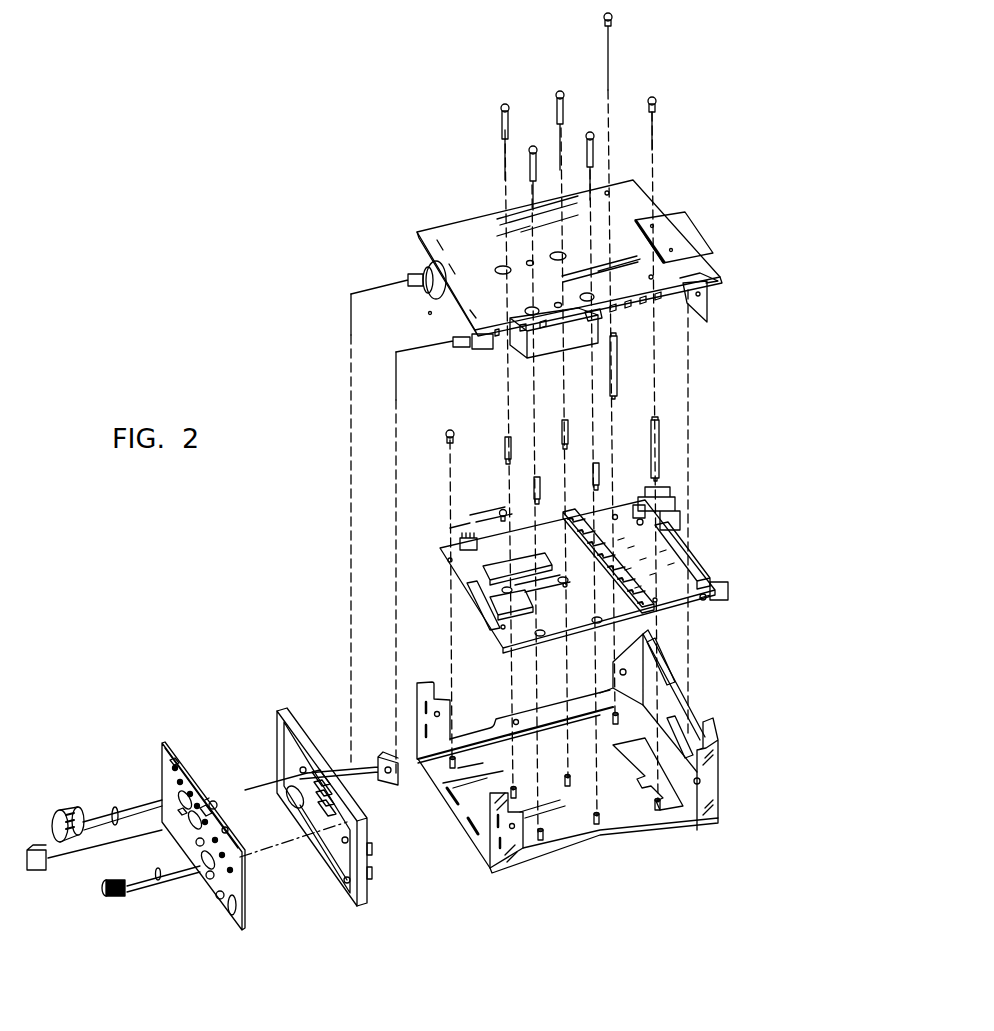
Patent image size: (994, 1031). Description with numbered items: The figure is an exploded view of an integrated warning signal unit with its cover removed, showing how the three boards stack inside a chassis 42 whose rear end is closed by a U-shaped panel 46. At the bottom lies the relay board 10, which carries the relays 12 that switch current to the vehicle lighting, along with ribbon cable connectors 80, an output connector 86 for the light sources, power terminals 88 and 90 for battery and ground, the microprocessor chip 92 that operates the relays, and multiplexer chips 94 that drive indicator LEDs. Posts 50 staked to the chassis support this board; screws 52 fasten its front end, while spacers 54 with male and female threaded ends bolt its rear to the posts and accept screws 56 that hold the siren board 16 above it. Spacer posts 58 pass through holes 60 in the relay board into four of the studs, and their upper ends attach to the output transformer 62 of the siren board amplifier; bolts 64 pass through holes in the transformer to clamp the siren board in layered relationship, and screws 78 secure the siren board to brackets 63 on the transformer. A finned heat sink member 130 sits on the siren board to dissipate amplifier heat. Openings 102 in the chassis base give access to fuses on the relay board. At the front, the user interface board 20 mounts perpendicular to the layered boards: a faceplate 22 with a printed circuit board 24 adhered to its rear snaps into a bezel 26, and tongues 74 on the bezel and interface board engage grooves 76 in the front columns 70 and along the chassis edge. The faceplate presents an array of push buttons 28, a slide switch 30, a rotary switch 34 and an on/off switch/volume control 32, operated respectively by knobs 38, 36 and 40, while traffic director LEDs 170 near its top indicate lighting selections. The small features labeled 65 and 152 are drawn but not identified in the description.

The relay board 10 is at (503, 516).
The relays 12 is at (573, 512).
The siren board 16 is at (495, 215).
The user interface board 20 is at (283, 683).
The faceplate 22 is at (237, 925).
The printed circuit board 24 is at (167, 745).
The bezel 26 is at (287, 713).
The push buttons 28 is at (205, 880).
The slide switch 30 is at (388, 762).
The on/off switch/volume control 32 is at (478, 348).
The rotary switch 34 is at (434, 296).
The knob 36 is at (62, 812).
The knob 38 is at (38, 866).
The knob 40 is at (108, 895).
The chassis 42 is at (660, 830).
The U-shaped panel 46 is at (700, 723).
The posts 50 is at (456, 762).
The screws 52 is at (446, 430).
The spacers 54 is at (617, 370).
The screws 56 is at (614, 22).
The spacer posts 58 is at (513, 445).
The holes 60 is at (515, 593).
The output transformer 62 is at (548, 350).
The brackets 63 is at (600, 317).
The bolts 64 is at (585, 156).
The openings 65 is at (560, 252).
The columns 70 is at (437, 690).
The tongues 74 is at (374, 872).
The grooves 76 is at (424, 732).
The screws 78 is at (534, 264).
The connectors 80 is at (466, 537).
The output connector 86 is at (703, 558).
The power terminal 88 is at (668, 497).
The power terminal 90 is at (727, 590).
The microprocessor chip 92 is at (500, 575).
The multiplexer chips 94 is at (495, 618).
The openings 102 is at (640, 746).
The finned heat sink member 130 is at (697, 228).
The flange 152 is at (720, 270).
The traffic director LEDs 170 is at (207, 807).